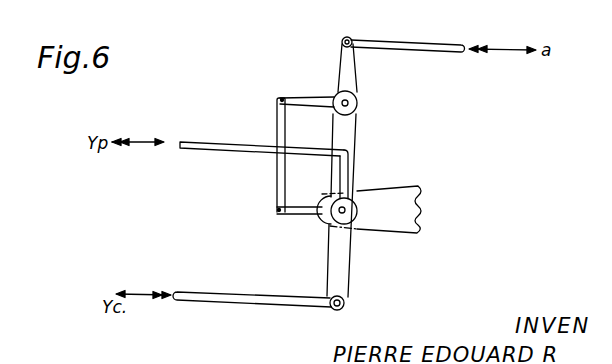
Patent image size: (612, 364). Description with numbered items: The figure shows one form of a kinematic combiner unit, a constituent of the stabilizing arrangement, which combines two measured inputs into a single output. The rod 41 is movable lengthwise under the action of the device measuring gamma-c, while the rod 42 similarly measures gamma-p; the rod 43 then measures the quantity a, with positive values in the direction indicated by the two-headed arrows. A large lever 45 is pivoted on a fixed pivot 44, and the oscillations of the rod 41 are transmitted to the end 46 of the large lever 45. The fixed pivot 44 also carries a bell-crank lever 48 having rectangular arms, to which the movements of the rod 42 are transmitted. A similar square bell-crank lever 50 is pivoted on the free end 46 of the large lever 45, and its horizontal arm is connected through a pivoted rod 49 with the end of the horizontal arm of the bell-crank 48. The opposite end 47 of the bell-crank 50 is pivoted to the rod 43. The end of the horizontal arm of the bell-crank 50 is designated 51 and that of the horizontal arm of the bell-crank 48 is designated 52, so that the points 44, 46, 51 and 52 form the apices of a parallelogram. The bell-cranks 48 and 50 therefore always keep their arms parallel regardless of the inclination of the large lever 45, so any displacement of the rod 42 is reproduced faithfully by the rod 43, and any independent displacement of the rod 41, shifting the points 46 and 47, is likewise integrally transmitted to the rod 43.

The rod 41 is at (270, 301).
The rod 42 is at (200, 143).
The rod 43 is at (446, 46).
The fixed pivot 44 is at (350, 210).
The large lever 45 is at (340, 250).
The end of the large lever 46 is at (358, 102).
The end of the bell-crank 47 is at (351, 39).
The bell-crank lever 48 is at (345, 178).
The pivoted rod 49 is at (282, 131).
The square bell-crank lever 50 is at (348, 77).
The end of the horizontal arm of the bell-crank 51 is at (280, 98).
The end of the horizontal arm of the lever 52 is at (277, 207).